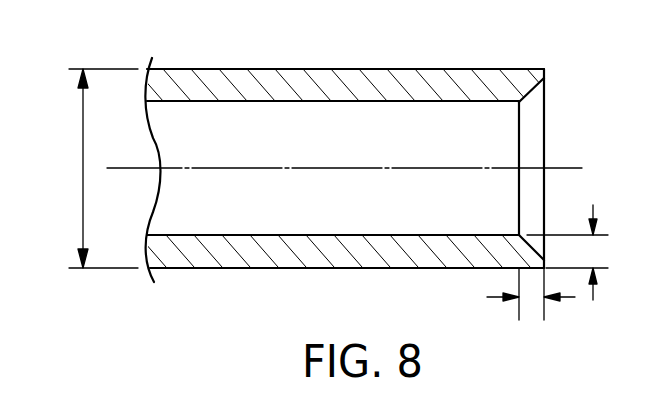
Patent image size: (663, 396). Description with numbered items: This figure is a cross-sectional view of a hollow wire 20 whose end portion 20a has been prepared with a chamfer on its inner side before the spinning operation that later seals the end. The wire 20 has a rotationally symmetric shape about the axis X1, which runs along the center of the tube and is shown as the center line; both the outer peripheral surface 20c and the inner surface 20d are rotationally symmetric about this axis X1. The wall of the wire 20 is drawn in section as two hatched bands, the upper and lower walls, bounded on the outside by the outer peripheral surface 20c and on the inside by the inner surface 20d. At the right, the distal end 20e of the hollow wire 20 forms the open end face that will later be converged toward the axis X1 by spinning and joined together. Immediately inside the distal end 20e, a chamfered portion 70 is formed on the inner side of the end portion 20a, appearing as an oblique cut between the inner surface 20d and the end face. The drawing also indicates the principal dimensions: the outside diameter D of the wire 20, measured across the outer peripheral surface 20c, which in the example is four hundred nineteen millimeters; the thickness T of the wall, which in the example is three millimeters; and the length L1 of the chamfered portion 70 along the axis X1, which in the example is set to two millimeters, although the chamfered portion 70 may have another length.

The wire 20 is at (213, 80).
The end portion 20a is at (482, 258).
The outer peripheral surface 20c is at (422, 69).
The inner surface 20d is at (340, 103).
The distal end 20e is at (546, 75).
The chamfered portion 70 is at (536, 92).
The axis X1 is at (565, 167).
The outside diameter D is at (81, 162).
The thickness T is at (596, 251).
The length of the chamfered portion L1 is at (532, 299).